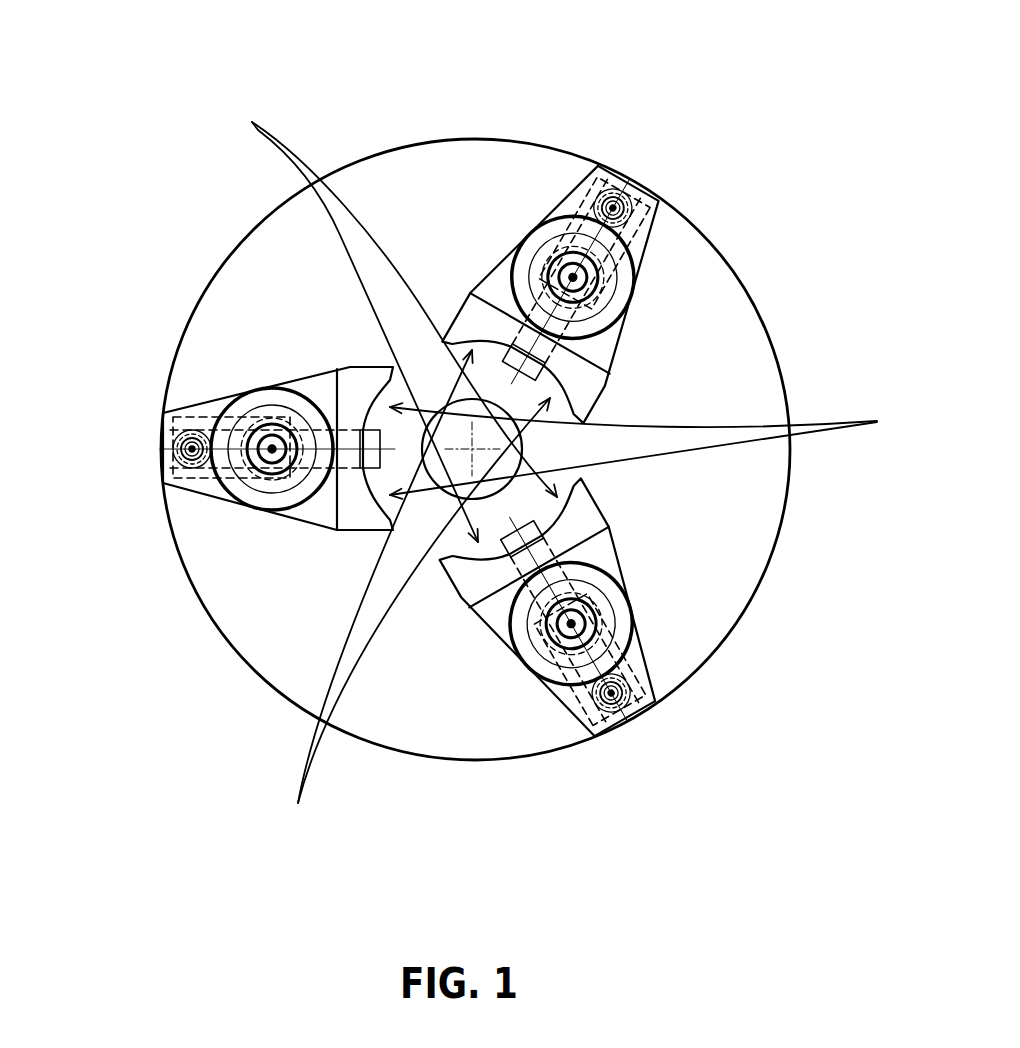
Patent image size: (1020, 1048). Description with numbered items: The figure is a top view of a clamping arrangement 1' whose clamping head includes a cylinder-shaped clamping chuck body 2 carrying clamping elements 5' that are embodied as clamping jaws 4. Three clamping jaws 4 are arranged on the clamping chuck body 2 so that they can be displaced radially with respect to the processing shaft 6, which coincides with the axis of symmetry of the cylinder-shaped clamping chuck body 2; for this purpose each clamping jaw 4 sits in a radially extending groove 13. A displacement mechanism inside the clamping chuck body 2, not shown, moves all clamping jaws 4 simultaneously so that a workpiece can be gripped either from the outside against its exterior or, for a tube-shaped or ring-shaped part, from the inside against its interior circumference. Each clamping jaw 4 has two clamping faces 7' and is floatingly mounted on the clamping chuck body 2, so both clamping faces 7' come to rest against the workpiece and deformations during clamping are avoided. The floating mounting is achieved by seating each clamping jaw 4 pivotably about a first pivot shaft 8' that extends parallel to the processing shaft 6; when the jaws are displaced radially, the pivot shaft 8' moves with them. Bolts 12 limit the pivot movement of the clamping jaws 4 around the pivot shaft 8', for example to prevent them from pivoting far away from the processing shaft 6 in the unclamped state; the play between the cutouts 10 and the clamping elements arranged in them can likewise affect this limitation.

The clamping arrangement 1' is at (460, 396).
The clamping chuck body 2 is at (238, 338).
The clamping jaws 4 is at (470, 323).
The clamping elements 5' is at (466, 367).
The processing shaft 6 is at (472, 449).
The clamping faces 7' is at (566, 465).
The first pivot shaft 8' is at (430, 427).
The cutouts 10 is at (472, 449).
The bolts 12 is at (615, 211).
The grooves 13 is at (540, 362).